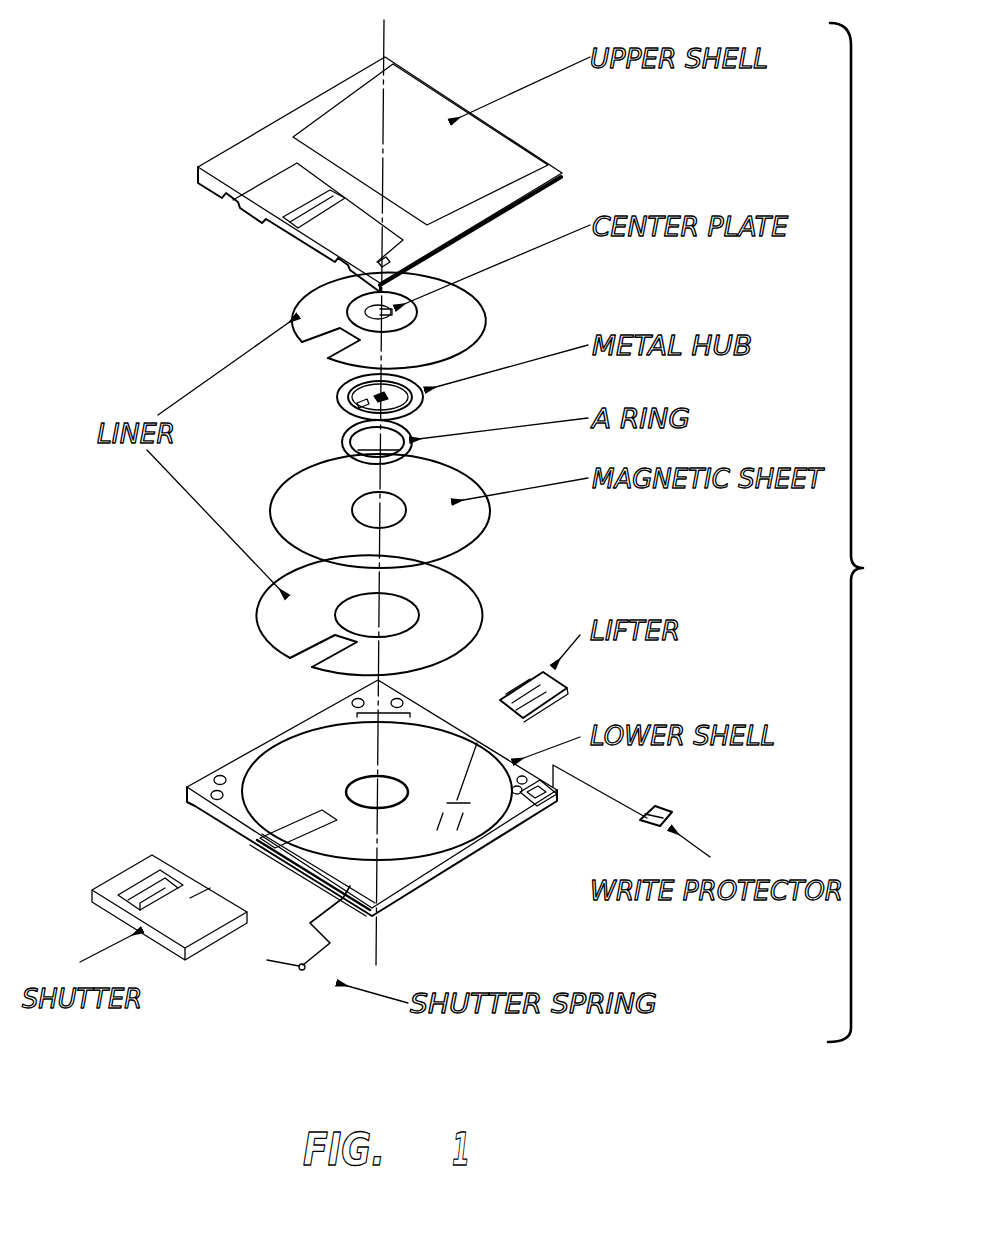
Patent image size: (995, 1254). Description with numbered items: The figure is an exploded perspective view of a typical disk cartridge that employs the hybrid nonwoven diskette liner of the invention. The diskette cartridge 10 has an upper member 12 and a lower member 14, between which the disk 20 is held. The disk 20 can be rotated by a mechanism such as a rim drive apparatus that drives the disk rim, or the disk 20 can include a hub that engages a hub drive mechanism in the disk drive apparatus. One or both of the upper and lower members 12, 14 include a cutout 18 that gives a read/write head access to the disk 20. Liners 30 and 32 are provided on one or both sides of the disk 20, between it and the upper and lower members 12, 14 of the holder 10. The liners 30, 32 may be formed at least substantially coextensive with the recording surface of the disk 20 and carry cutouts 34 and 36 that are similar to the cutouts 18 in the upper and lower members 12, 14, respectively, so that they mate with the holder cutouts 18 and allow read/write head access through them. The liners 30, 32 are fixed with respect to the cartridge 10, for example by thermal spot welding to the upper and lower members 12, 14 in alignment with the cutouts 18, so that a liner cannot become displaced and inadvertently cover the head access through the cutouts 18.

The diskette cartridge 10 is at (860, 532).
The upper member 12 is at (230, 143).
The lower member 14 is at (188, 805).
The cutout 18 is at (283, 230).
The disk 20 is at (283, 482).
The liner 30 is at (290, 298).
The liner 32 is at (268, 600).
The cutout 34 is at (328, 335).
The cutout 36 is at (312, 652).